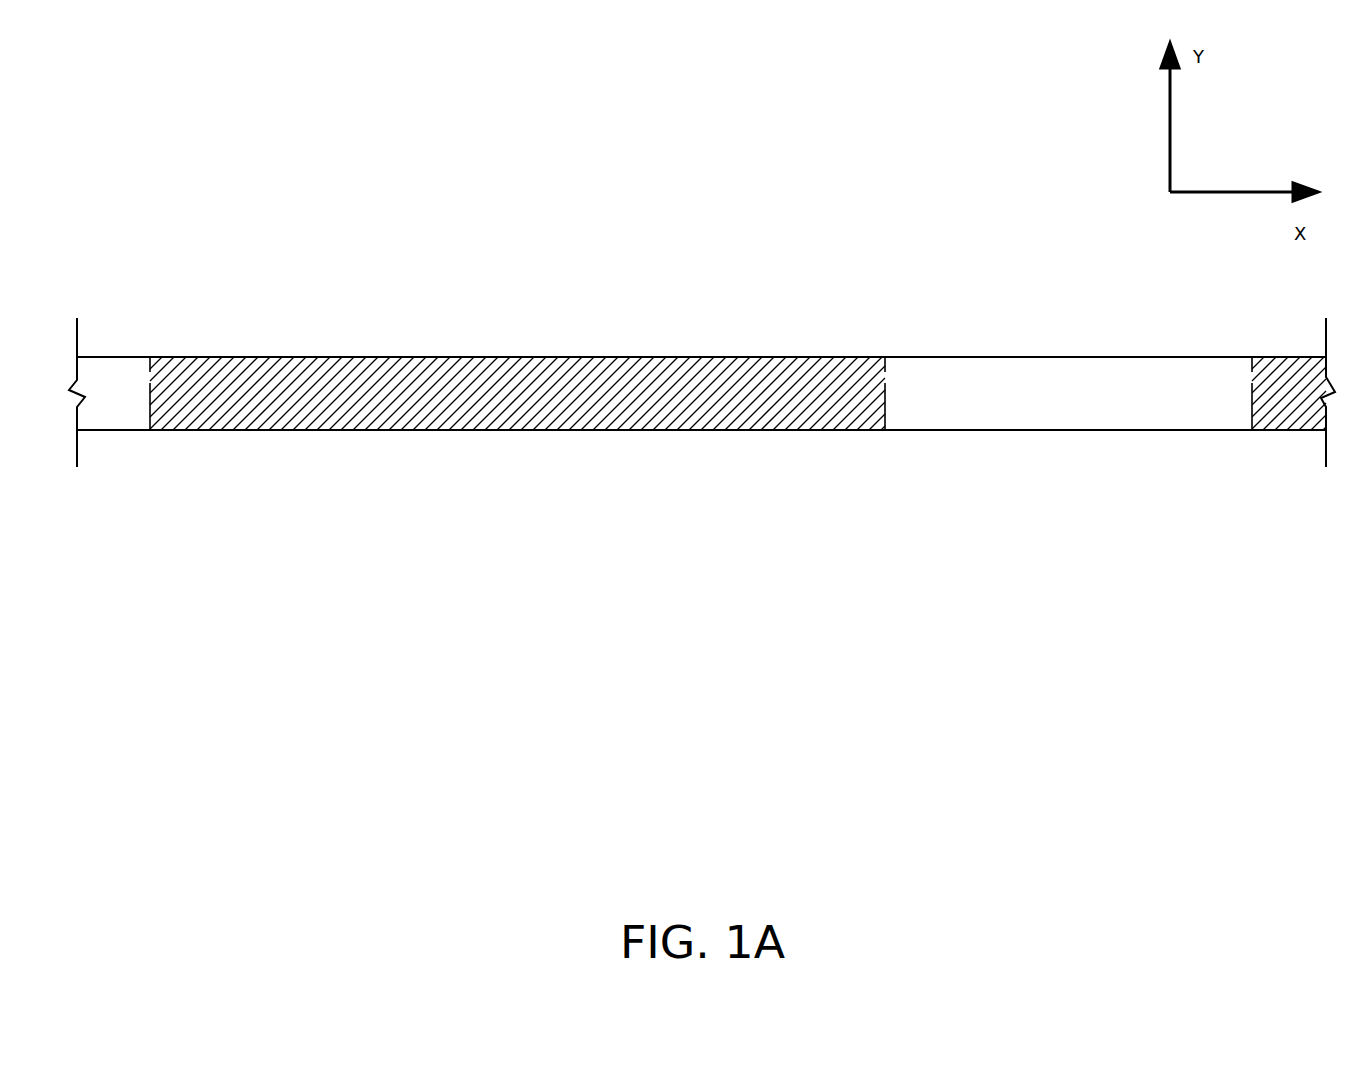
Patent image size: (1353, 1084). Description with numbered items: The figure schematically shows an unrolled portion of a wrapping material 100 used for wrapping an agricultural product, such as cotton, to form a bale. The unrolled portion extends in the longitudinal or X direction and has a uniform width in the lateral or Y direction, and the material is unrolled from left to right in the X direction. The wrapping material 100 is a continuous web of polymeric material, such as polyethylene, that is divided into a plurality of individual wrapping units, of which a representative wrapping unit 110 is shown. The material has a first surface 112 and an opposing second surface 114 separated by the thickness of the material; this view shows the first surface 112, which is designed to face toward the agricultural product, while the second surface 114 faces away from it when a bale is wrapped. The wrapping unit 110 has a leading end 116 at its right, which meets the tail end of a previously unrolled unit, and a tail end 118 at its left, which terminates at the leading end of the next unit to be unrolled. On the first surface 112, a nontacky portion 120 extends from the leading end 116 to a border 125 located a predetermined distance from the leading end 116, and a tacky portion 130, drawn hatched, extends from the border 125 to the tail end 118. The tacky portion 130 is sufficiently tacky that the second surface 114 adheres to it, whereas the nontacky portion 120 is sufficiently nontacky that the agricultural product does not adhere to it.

The wrapping material 100 is at (720, 786).
The wrapping unit 110 is at (702, 399).
The first surface 112 is at (848, 428).
The second surface 114 is at (796, 357).
The leading end 116 is at (1250, 374).
The tail end 118 is at (150, 418).
The nontacky portion 120 is at (995, 402).
The border 125 is at (885, 373).
The tacky portion 130 is at (572, 412).